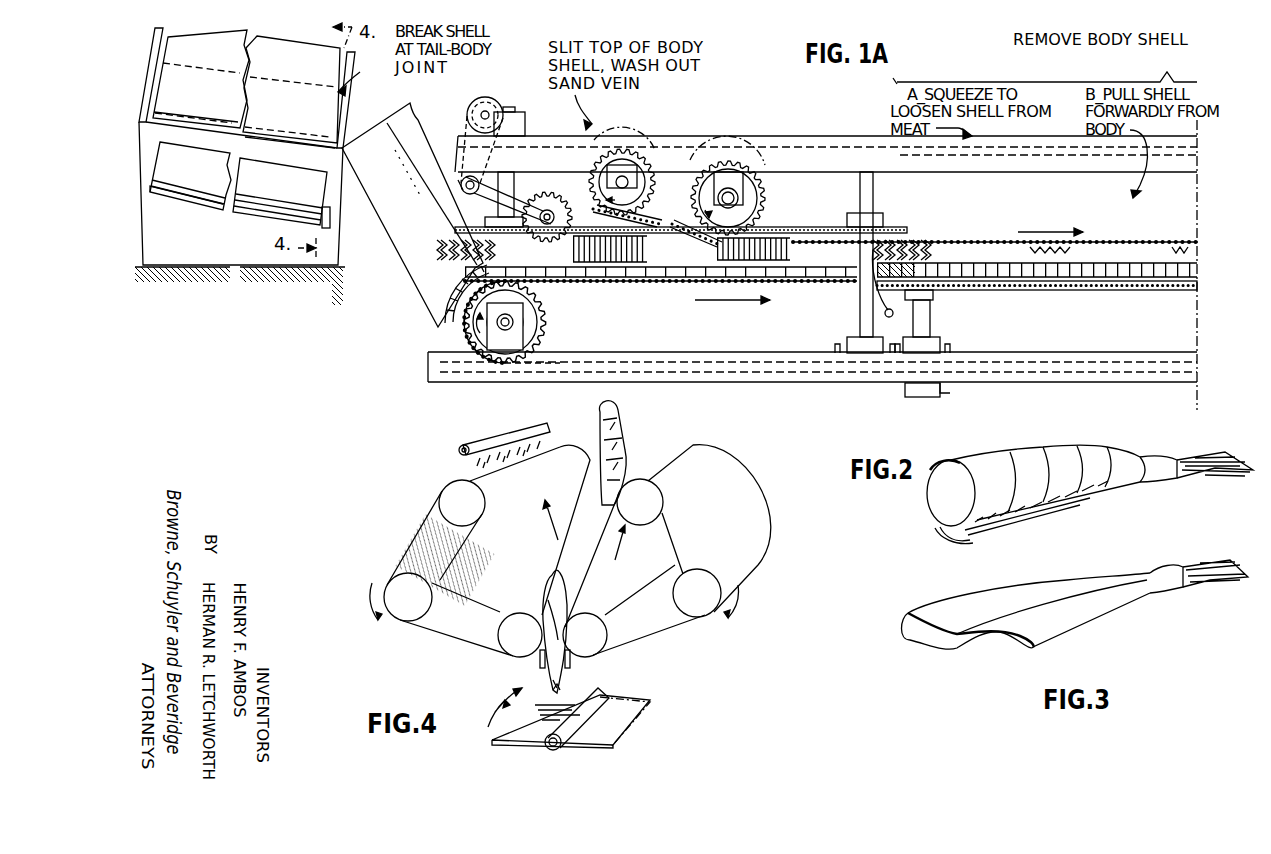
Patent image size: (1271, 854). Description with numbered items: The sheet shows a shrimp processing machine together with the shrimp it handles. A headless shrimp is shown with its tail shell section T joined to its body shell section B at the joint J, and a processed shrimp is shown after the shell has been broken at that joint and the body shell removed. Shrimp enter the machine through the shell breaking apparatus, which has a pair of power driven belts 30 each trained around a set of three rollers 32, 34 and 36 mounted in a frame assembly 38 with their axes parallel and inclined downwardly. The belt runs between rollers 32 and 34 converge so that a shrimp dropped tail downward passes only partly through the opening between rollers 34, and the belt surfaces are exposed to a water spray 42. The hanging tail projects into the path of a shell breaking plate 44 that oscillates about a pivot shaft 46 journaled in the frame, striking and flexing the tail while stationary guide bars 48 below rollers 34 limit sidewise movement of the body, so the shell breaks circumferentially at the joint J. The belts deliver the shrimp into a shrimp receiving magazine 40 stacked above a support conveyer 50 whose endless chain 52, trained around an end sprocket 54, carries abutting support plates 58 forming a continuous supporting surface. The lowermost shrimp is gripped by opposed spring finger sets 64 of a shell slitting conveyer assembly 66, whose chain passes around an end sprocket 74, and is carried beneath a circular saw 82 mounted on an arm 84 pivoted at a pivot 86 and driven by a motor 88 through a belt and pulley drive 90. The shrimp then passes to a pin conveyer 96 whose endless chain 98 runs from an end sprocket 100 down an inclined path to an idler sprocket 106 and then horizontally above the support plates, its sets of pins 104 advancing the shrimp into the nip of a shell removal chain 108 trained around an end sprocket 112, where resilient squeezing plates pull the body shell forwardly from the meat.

In FIG. 1A, the power driven belts 30 is at (296, 68).
In FIG. 4, the power driven belts 30 is at (425, 530).
In FIG. 4, the roller 32 is at (551, 502).
In FIG. 1A, the roller 34 is at (266, 80).
In FIG. 4, the roller 34 is at (552, 635).
In FIG. 4, the roller 36 is at (554, 595).
In FIG. 1A, the frame assembly 38 is at (341, 228).
In FIG. 1A, the shrimp receiving magazine 40 is at (412, 270).
In FIG. 4, the water spray 42 is at (497, 430).
In FIG. 1A, the shell breaking plate 44 is at (290, 195).
In FIG. 4, the shell breaking plate 44 is at (522, 728).
In FIG. 1A, the pivot shaft 46 is at (150, 192).
In FIG. 4, the pivot shaft 46 is at (548, 750).
In FIG. 4, the stationary guide bars 48 is at (538, 660).
In FIG. 1A, the support conveyer 50 is at (600, 287).
In FIG. 1A, the endless chain 52 is at (795, 283).
In FIG. 1A, the end sprocket 54 is at (545, 327).
In FIG. 1A, the support plate 58 is at (825, 279).
In FIG. 1A, the spring finger sets 64 is at (492, 257).
In FIG. 1A, the shell slitting conveyer assembly 66 is at (800, 224).
In FIG. 1A, the end sprocket 74 is at (870, 212).
In FIG. 1A, the circular saw 82 is at (560, 196).
In FIG. 1A, the arm 84 is at (533, 192).
In FIG. 1A, the pivot 86 is at (464, 180).
In FIG. 1A, the motor 88 is at (485, 100).
In FIG. 1A, the belt and pulley drive 90 is at (546, 195).
In FIG. 1A, the pin conveyer 96 is at (984, 242).
In FIG. 1A, the endless chain 98 is at (1136, 241).
In FIG. 1A, the end sprocket 100 is at (648, 192).
In FIG. 1A, the pins 104 is at (1075, 252).
In FIG. 1A, the idler sprocket 106 is at (752, 200).
In FIG. 1A, the shell removal chain 108 is at (1050, 286).
In FIG. 1A, the end sprocket 112 is at (936, 297).
In FIG. 2, the joint J is at (1142, 457).
In FIG. 2, the tail shell section T is at (1163, 473).
In FIG. 3, the tail shell section T is at (1170, 583).
In FIG. 2, the body shell section B is at (1050, 478).